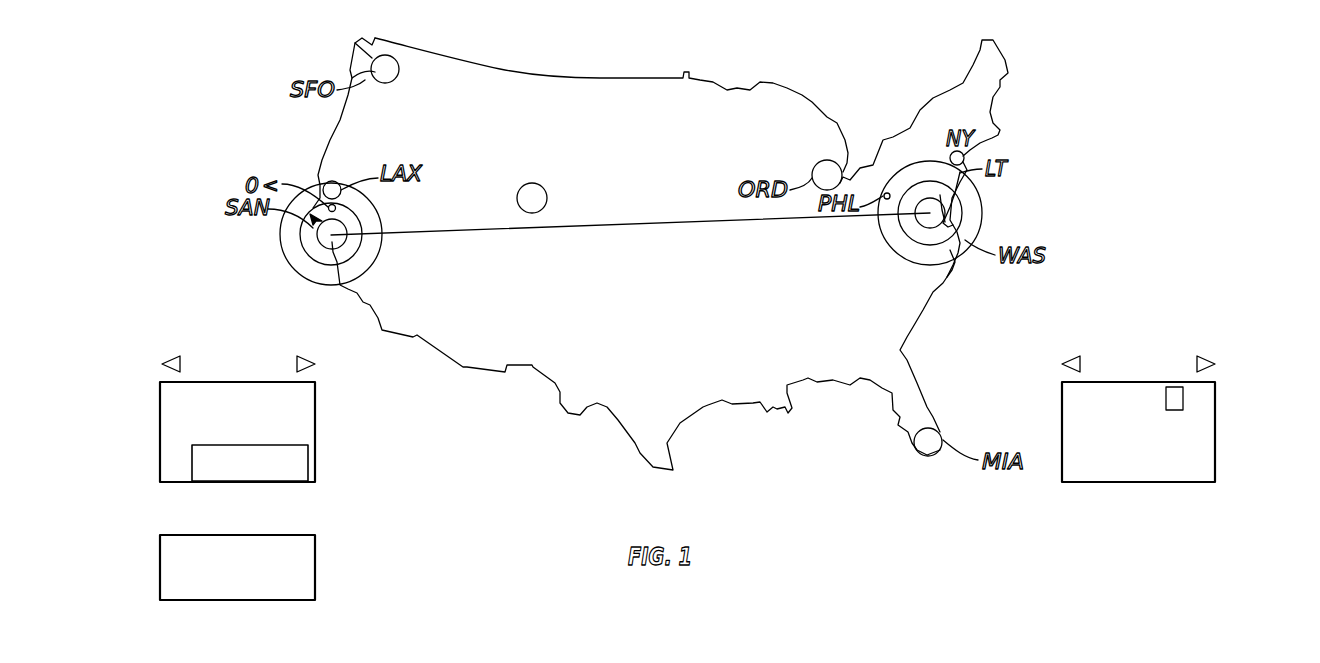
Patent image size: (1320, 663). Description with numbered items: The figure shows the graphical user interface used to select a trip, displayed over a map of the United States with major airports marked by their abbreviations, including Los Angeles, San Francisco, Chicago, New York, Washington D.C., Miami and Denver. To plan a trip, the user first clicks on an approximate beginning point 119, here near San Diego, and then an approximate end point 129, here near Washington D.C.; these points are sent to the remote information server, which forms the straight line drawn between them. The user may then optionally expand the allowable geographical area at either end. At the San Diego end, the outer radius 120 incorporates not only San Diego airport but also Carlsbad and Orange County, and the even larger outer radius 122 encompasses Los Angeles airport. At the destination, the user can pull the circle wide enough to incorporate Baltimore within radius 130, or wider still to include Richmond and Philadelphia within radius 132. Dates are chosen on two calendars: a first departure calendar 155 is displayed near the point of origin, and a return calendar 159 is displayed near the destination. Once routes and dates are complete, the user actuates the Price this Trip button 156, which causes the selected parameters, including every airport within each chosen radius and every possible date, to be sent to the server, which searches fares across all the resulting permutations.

The beginning point 119 is at (343, 247).
The outer radius 120 is at (283, 258).
The larger outer radius 122 is at (318, 183).
The end point 129 is at (978, 227).
The radius 130 is at (912, 242).
The radius 132 is at (948, 280).
The departure calendar 155 is at (160, 432).
The Price this Trip button 156 is at (160, 570).
The return calendar 159 is at (1215, 432).